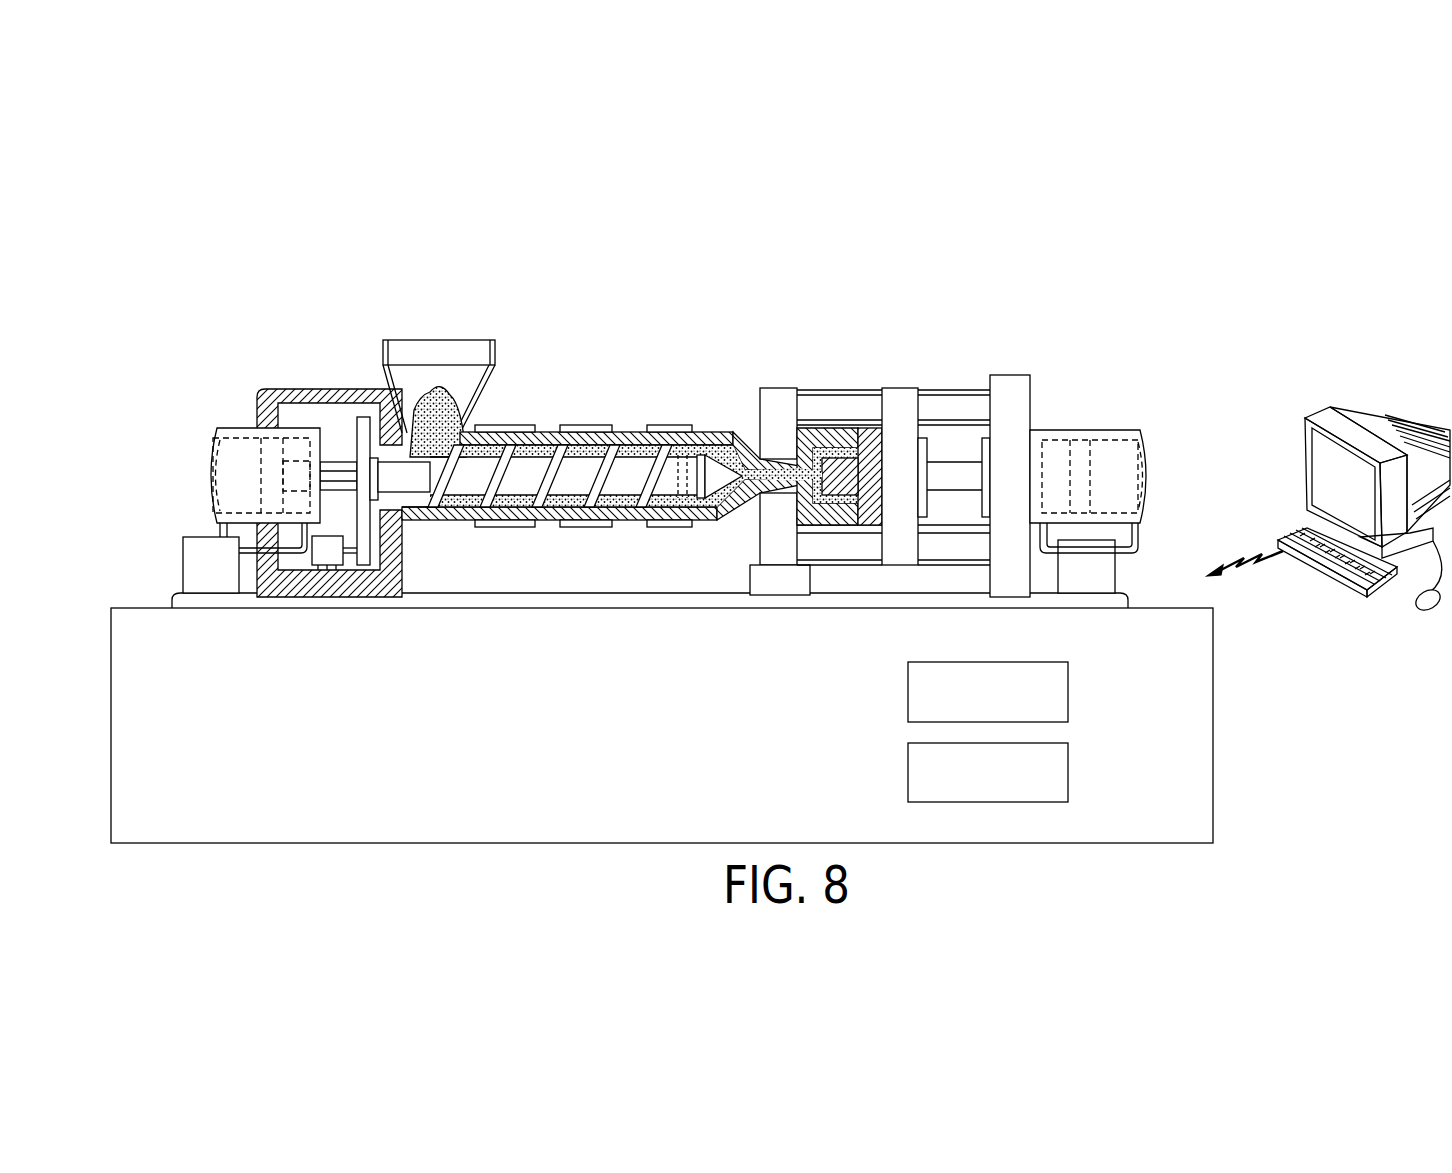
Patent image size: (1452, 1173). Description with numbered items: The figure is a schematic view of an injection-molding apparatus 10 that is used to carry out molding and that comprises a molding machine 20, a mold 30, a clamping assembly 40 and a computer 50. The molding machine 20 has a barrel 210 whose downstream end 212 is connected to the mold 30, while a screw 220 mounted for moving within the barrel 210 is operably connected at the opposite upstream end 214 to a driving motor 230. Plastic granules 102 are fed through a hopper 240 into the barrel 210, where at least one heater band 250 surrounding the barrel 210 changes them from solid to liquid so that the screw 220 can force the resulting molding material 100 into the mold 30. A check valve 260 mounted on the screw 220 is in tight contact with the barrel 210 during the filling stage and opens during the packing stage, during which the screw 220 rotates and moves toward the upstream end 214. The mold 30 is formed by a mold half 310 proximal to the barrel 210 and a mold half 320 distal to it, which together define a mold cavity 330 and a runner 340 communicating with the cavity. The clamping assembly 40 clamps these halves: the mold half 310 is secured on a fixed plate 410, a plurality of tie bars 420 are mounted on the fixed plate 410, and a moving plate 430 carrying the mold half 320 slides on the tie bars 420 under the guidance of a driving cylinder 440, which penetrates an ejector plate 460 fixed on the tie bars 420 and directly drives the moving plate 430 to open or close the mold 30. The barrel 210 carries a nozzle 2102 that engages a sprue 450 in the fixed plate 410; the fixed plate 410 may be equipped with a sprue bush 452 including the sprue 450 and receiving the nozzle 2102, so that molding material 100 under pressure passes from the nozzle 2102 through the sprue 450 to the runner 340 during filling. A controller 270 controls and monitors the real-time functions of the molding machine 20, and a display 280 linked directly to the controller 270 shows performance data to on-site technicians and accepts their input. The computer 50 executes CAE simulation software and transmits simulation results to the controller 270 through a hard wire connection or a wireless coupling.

The injection-molding apparatus 10 is at (136, 175).
The molding machine 20 is at (184, 598).
The mold 30 is at (883, 292).
The clamping assembly 40 is at (1138, 326).
The computer 50 is at (1343, 414).
The molding material 100 is at (703, 455).
The plastic granules 102 is at (441, 395).
The barrel 210 is at (550, 432).
The downstream end 212 is at (753, 512).
The upstream end 214 is at (430, 528).
The screw 220 is at (630, 470).
The driving motor 230 is at (233, 428).
The hopper 240 is at (383, 350).
The heater band 250 is at (586, 425).
The check valve 260 is at (684, 500).
The controller 270 is at (1070, 772).
The display 280 is at (1070, 690).
The nozzle 2102 is at (757, 460).
The mold half 310 is at (815, 428).
The mold half 320 is at (872, 428).
The mold cavity 330 is at (845, 500).
The runner 340 is at (805, 482).
The fixed plate 410 is at (778, 400).
The tie bars 420 is at (958, 412).
The moving plate 430 is at (900, 400).
The driving cylinder 440 is at (1106, 430).
The sprue 450 is at (784, 502).
The sprue bush 452 is at (789, 484).
The ejector plate 460 is at (1011, 395).